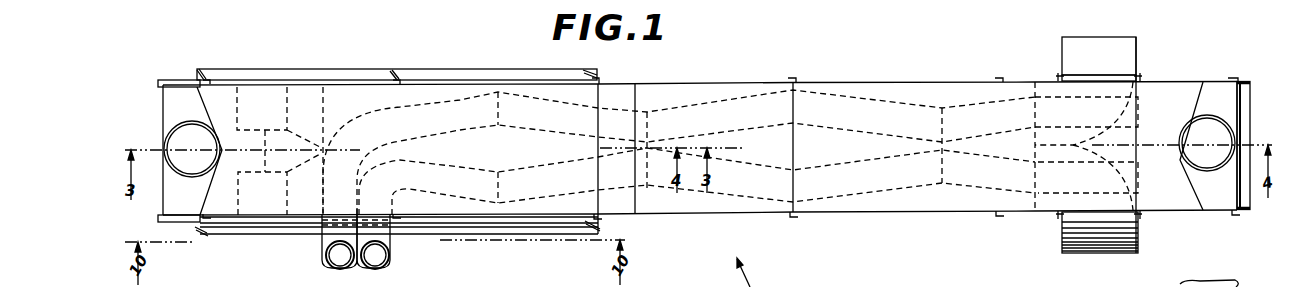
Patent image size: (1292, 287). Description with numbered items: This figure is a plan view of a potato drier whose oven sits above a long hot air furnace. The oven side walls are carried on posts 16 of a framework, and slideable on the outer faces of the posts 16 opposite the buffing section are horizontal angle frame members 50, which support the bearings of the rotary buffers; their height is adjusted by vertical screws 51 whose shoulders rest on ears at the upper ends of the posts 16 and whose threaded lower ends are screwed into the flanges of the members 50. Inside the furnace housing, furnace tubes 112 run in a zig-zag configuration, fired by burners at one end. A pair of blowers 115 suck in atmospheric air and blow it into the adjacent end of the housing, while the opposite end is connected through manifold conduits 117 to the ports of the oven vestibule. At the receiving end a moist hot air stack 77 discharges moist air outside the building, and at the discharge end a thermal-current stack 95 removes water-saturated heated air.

The posts 16 is at (208, 82).
The horizontal angle frame members 50 is at (477, 73).
The vertical screws 51 is at (205, 70).
The moist hot air stack 77 is at (188, 175).
The thermal-current stack 95 is at (1210, 177).
The furnace tubes 112 is at (877, 193).
The blowers 115 is at (262, 100).
The manifold conduits 117 is at (1118, 37).